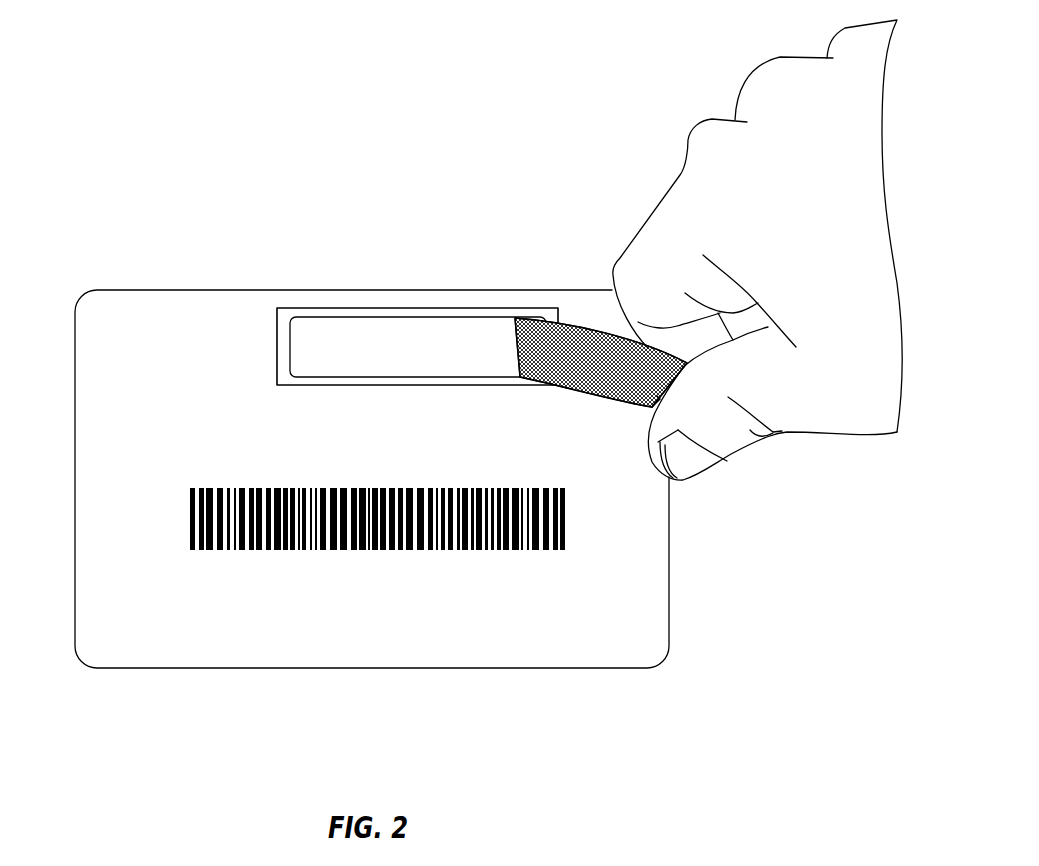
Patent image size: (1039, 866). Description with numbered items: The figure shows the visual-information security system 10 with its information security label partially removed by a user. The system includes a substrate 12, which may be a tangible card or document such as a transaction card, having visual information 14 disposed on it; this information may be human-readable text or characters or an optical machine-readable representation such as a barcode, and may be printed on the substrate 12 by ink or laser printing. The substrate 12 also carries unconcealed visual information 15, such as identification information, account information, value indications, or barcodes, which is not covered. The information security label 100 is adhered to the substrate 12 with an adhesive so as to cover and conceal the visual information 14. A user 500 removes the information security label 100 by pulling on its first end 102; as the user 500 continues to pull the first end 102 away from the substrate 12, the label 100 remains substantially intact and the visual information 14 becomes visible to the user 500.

The visual-information security system 10 is at (143, 255).
The substrate 12 is at (92, 353).
The visual information 14 is at (385, 323).
The unconcealed visual information 15 is at (190, 511).
The information security label 100 is at (578, 376).
The first end 102 is at (655, 403).
The user 500 is at (853, 428).